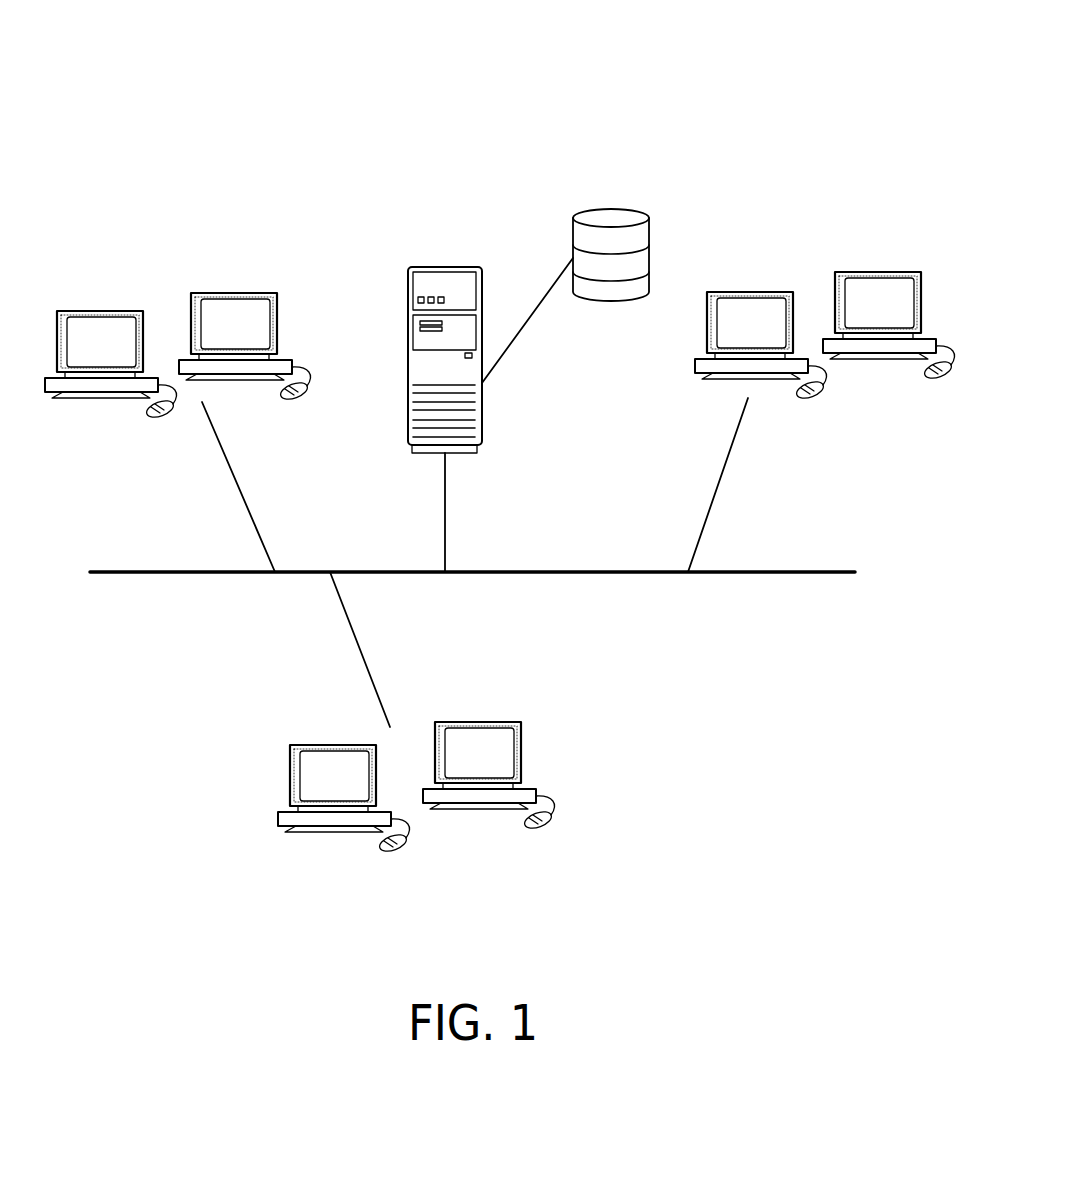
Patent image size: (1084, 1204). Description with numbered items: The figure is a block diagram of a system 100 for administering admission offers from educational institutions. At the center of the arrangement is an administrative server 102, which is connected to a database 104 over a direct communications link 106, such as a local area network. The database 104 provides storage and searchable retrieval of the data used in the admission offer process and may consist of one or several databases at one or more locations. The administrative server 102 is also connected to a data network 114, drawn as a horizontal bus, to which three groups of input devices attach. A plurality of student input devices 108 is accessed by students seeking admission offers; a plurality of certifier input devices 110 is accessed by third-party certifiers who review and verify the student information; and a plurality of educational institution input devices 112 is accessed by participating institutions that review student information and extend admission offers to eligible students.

The system 100 is at (735, 57).
The administrative server 102 is at (444, 266).
The database 104 is at (610, 208).
The direct communications link 106 is at (523, 333).
The student input devices 108 is at (160, 295).
The certifier input devices 110 is at (433, 850).
The educational institution input devices 112 is at (808, 290).
The data network 114 is at (592, 570).